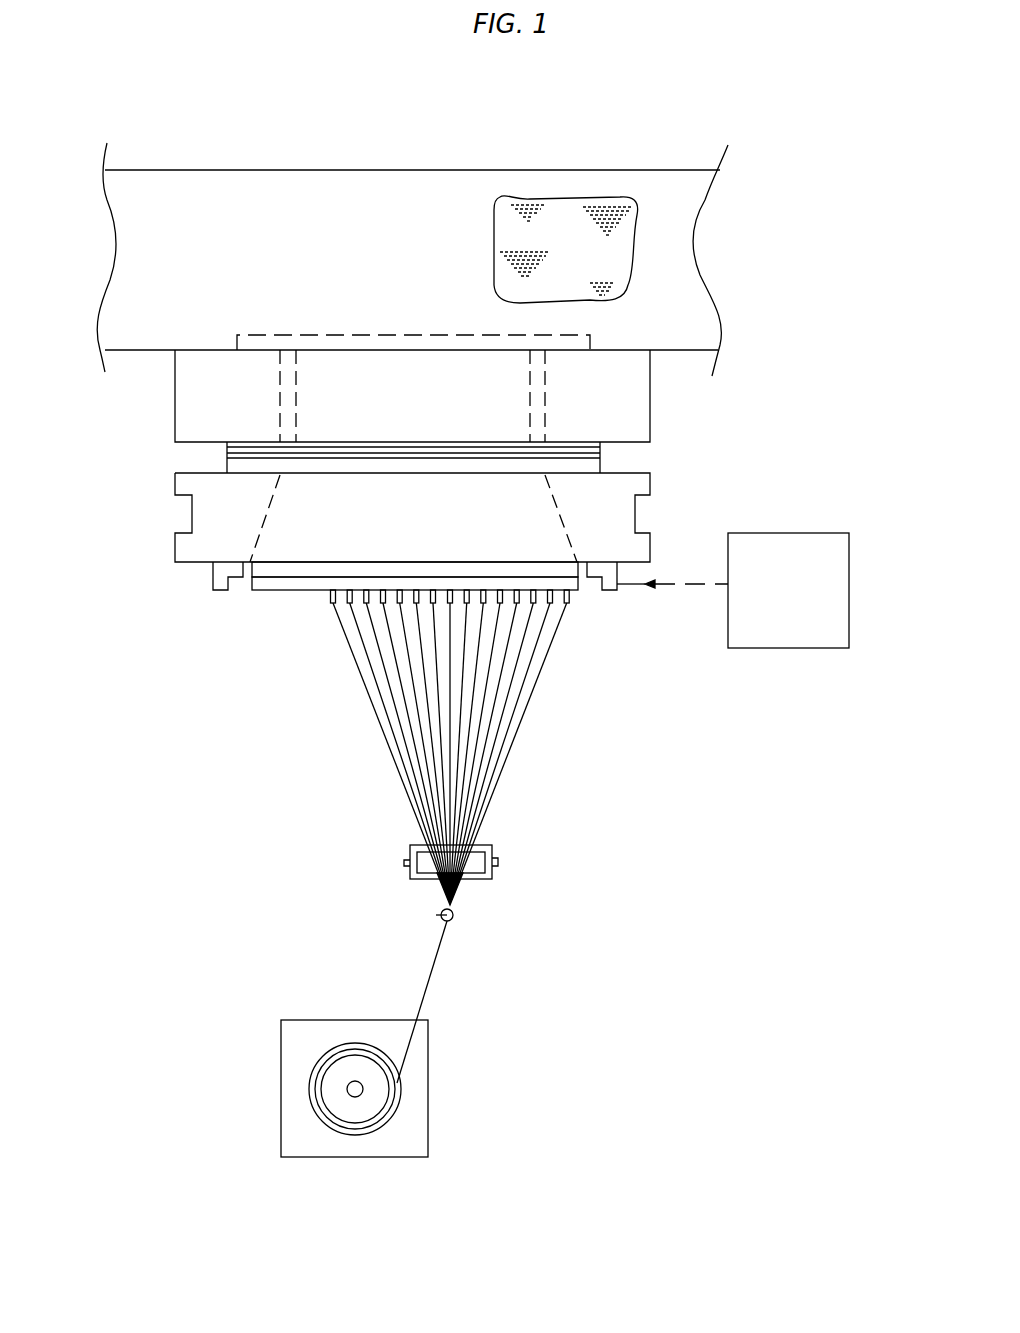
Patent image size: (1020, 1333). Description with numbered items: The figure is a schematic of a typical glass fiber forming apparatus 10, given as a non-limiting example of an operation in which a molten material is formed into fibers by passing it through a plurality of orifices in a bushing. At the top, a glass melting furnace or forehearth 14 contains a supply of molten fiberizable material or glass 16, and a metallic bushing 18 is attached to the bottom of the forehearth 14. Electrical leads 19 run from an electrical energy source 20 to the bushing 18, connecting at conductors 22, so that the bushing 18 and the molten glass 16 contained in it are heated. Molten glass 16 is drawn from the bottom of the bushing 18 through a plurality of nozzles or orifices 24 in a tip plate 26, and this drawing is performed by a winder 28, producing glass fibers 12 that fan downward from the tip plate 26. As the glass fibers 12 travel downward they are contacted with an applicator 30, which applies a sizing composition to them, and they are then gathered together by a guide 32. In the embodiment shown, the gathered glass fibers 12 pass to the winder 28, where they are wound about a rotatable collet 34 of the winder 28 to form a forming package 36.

The fiber forming apparatus 10 is at (130, 687).
The glass fibers 12 is at (518, 703).
The forehearth 14 is at (372, 170).
The molten glass 16 is at (637, 197).
The bushing 18 is at (577, 562).
The electrical leads 19 is at (645, 584).
The electrical energy source 20 is at (817, 648).
The conductors 22 is at (610, 590).
The nozzles 24 is at (350, 603).
The tip plate 26 is at (277, 592).
The winder 28 is at (428, 1093).
The applicator 30 is at (498, 862).
The guide 32 is at (453, 913).
The rotatable collet 34 is at (320, 1095).
The forming package 36 is at (363, 1133).